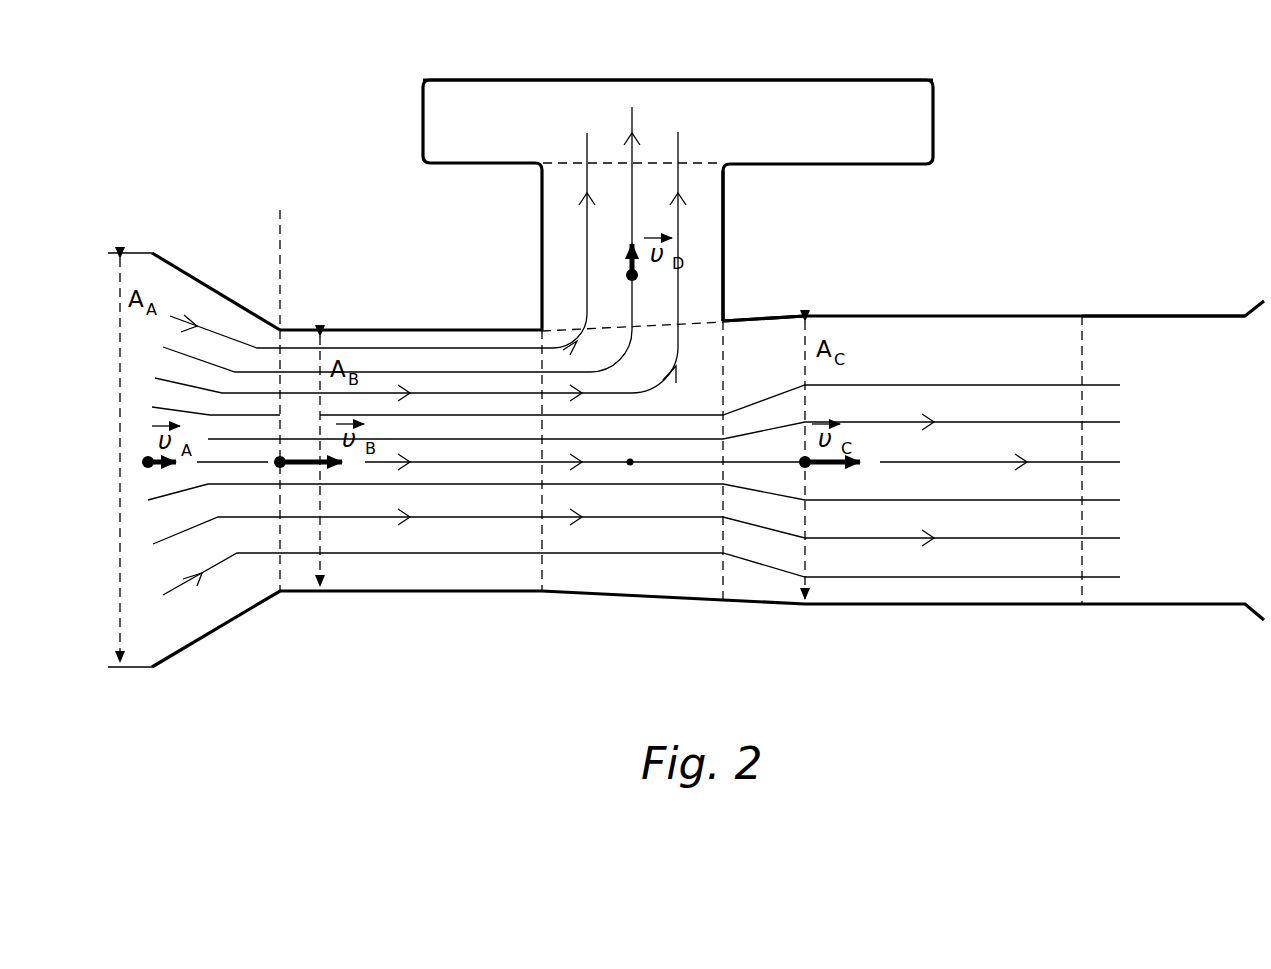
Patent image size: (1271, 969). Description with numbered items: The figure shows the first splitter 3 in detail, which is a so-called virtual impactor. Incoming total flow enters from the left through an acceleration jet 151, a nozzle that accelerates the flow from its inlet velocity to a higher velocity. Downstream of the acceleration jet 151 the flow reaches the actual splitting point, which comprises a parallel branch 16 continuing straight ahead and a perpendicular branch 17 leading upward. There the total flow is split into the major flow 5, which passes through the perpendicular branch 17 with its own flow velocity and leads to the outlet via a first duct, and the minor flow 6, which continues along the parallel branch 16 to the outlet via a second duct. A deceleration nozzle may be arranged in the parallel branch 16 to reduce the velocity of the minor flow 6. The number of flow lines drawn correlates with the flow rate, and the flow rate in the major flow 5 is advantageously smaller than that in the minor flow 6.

The first splitter 3 is at (686, 373).
The major flow 5 is at (711, 117).
The minor flow 6 is at (1120, 360).
The parallel branch 16 is at (743, 297).
The perpendicular branch 17 is at (745, 282).
The acceleration jet 151 is at (280, 330).